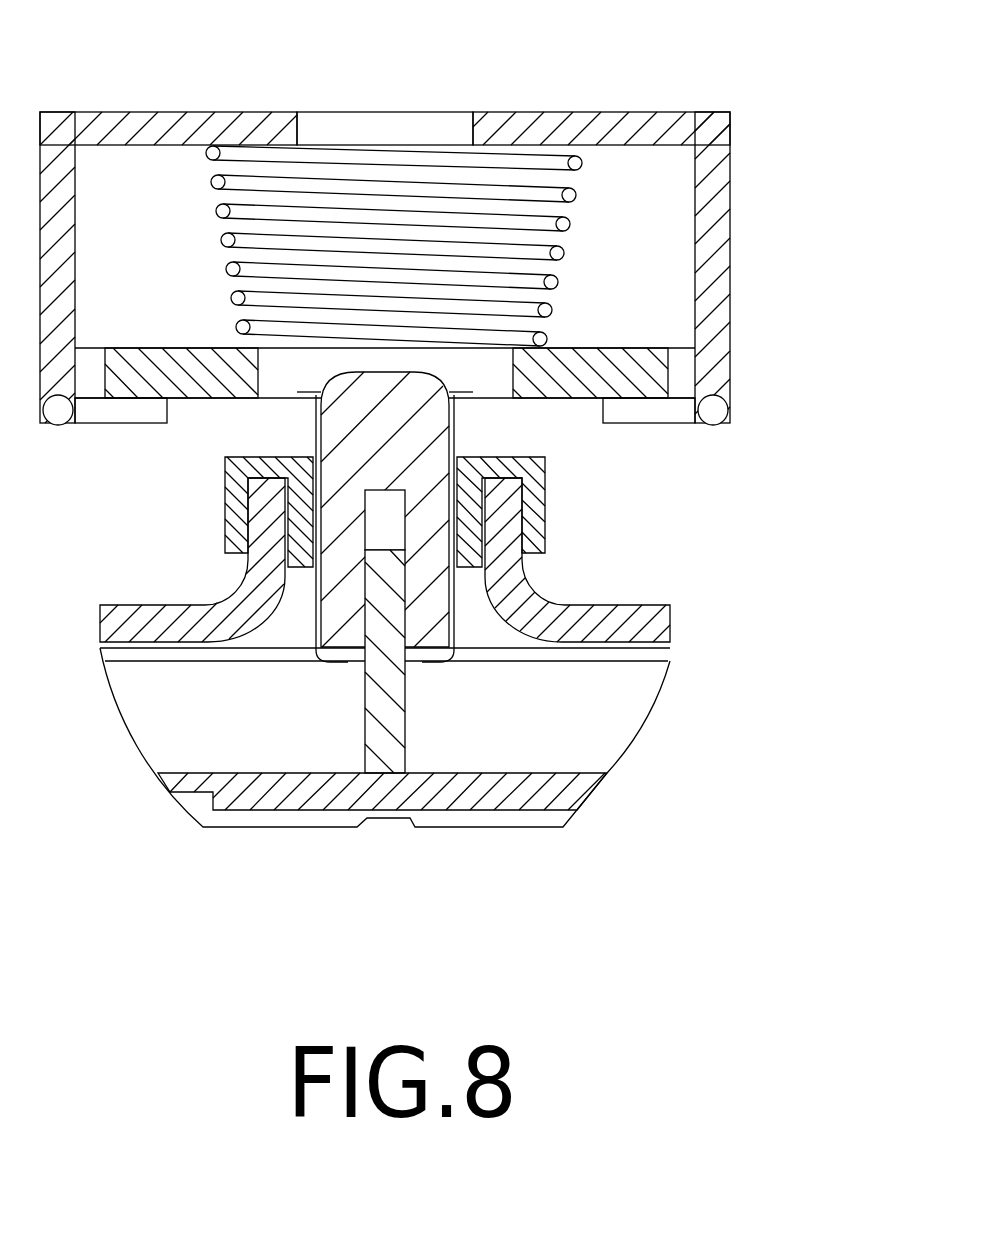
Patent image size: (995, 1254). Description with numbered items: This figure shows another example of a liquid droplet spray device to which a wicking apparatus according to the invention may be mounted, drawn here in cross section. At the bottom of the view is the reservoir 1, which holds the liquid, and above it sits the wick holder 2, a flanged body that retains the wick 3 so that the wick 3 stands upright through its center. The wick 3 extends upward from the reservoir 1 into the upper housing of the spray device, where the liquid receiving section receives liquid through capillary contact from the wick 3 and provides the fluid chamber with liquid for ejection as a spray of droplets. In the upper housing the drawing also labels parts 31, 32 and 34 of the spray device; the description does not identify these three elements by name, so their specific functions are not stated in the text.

The reservoir 1 is at (598, 795).
The wick holder 2 is at (637, 607).
The wick 3 is at (445, 412).
The sleeve 31 is at (307, 392).
The bottom plate of housing 32 is at (605, 356).
The opening in housing top 34 is at (392, 120).